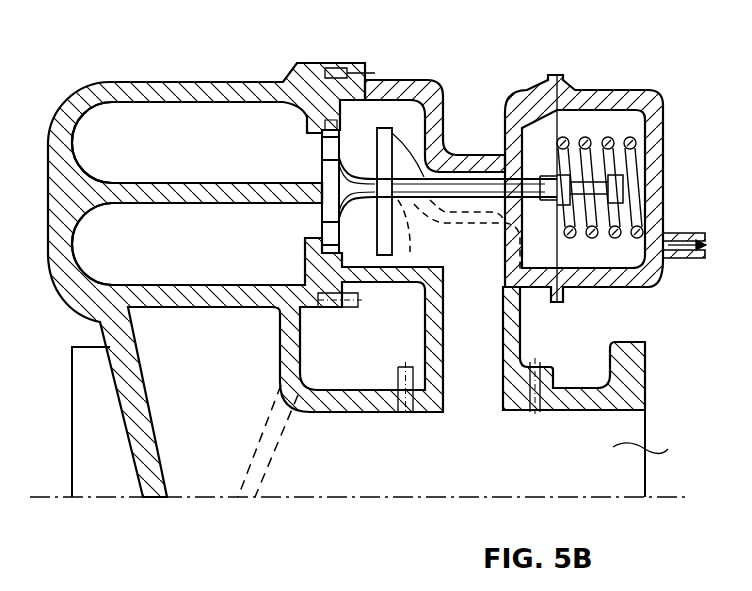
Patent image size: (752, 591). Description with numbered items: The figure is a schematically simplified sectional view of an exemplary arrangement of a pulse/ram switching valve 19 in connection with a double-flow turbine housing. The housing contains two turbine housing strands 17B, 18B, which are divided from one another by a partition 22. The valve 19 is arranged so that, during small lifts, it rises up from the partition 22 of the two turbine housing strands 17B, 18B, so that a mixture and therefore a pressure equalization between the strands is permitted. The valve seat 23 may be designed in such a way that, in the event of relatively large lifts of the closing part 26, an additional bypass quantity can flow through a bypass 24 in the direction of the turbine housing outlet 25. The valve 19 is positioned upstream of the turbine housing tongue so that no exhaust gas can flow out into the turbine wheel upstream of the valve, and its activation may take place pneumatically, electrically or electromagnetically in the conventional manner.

The turbine housing strand 17B is at (137, 146).
The turbine housing strand 18B is at (118, 258).
The partition 22 is at (193, 196).
The valve seat 23 is at (318, 133).
The closing part 26 is at (352, 167).
The pulse/ram switching valve 19 is at (593, 88).
The bypass 24 is at (477, 312).
The turbine housing outlet 25 is at (652, 453).